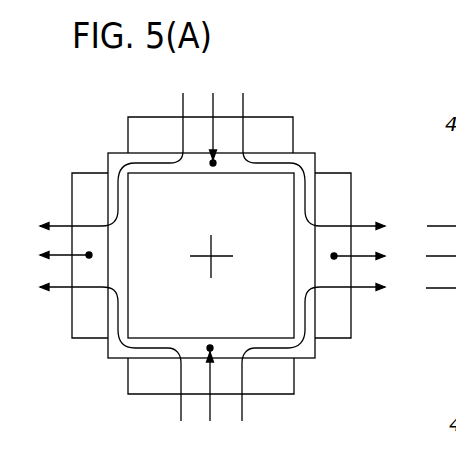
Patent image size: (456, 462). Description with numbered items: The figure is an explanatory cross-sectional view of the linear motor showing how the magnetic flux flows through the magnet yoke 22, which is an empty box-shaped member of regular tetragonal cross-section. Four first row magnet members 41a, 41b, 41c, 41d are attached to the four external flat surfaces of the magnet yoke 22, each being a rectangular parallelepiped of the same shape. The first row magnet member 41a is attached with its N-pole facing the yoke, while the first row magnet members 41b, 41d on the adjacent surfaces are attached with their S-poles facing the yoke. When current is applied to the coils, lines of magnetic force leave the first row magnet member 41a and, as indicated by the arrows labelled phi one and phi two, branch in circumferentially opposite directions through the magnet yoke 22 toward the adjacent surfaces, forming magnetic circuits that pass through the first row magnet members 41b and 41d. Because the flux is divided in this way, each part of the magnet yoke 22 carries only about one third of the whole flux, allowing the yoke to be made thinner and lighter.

The magnet yoke 22 is at (303, 156).
The first row magnet member 41a is at (147, 120).
The first row magnet member 41b is at (85, 328).
The first row magnet member 41c is at (276, 381).
The first row magnet member 41d is at (336, 183).